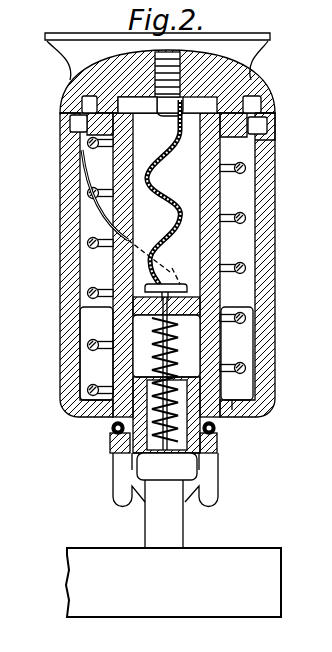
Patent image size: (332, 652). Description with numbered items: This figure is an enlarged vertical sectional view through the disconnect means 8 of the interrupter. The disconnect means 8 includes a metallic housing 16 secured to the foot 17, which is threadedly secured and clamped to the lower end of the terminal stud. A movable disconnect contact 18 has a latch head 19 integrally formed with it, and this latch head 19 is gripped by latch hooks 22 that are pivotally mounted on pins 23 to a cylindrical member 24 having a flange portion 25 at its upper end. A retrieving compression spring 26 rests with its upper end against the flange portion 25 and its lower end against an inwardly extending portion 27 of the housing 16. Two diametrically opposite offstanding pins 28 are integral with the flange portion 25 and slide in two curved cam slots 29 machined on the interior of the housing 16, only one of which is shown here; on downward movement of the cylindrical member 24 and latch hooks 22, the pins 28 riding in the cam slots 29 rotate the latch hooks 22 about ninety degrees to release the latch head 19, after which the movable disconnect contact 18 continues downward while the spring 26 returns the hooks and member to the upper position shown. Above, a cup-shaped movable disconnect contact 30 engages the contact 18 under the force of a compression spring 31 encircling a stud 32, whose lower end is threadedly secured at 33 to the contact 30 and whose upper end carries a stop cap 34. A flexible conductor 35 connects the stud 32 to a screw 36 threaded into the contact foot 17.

The disconnect means 8 is at (45, 267).
The metallic housing 16 is at (275, 256).
The foot 17 is at (268, 42).
The movable disconnect contact 18 is at (185, 532).
The latch head 19 is at (183, 471).
The latch hooks 22 is at (112, 496).
The pins 23 is at (110, 436).
The cylindrical member 24 is at (220, 352).
The flange portion 25 is at (274, 133).
The retrieving compression spring 26 is at (243, 220).
The inwardly extending portion 27 is at (236, 400).
The offstanding pins 28 is at (64, 123).
The curved cam slots 29 is at (97, 207).
The cup-shaped movable disconnect contact 30 is at (188, 445).
The compression spring 31 is at (174, 373).
The stud 32 is at (163, 360).
The threaded securement 33 is at (186, 470).
The stop cap 34 is at (182, 290).
The flexible conductor 35 is at (163, 207).
The screw 36 is at (160, 104).